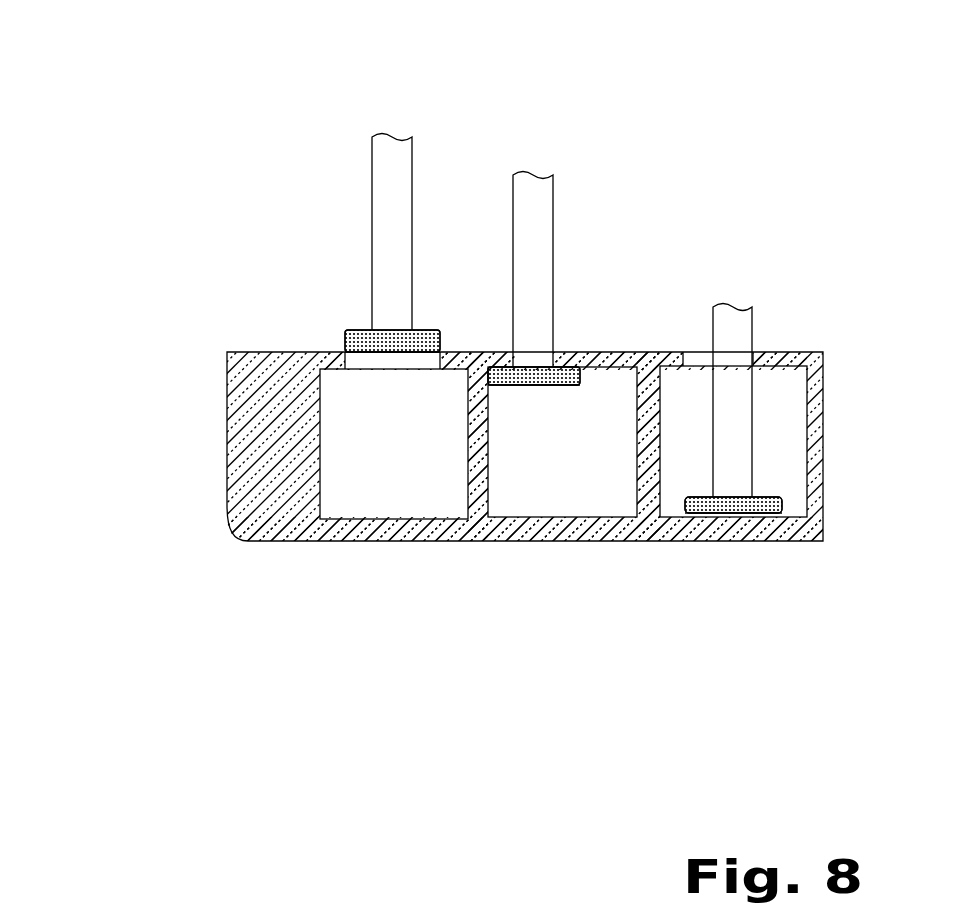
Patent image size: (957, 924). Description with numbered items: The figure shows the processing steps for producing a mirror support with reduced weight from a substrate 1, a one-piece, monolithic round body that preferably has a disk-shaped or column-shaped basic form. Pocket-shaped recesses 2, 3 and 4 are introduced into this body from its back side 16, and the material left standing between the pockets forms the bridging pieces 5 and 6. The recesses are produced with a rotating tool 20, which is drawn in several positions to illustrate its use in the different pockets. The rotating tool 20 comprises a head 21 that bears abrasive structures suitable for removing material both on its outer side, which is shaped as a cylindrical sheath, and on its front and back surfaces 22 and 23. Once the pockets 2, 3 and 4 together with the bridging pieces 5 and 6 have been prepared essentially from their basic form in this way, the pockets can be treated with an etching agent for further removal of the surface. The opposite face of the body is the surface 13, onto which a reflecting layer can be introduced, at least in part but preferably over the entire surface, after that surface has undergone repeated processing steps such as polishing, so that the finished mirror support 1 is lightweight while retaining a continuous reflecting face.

The substrate 1 is at (254, 415).
The first recess 2 is at (381, 482).
The first recess 3 is at (576, 485).
The first recess 4 is at (794, 464).
The bridging piece 5 is at (481, 481).
The bridging piece 6 is at (649, 482).
The surface 13 is at (264, 549).
The back side 16 is at (285, 351).
The rotating tool 20 is at (392, 155).
The head 21 is at (428, 335).
The front surface 22 is at (355, 329).
The back surface 23 is at (400, 355).